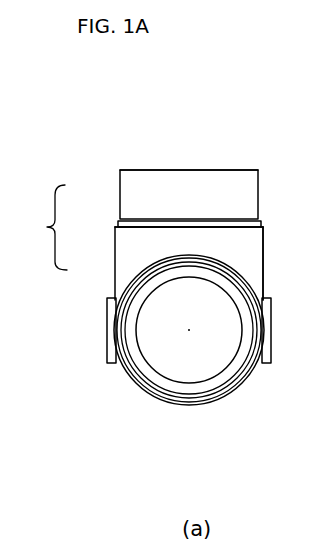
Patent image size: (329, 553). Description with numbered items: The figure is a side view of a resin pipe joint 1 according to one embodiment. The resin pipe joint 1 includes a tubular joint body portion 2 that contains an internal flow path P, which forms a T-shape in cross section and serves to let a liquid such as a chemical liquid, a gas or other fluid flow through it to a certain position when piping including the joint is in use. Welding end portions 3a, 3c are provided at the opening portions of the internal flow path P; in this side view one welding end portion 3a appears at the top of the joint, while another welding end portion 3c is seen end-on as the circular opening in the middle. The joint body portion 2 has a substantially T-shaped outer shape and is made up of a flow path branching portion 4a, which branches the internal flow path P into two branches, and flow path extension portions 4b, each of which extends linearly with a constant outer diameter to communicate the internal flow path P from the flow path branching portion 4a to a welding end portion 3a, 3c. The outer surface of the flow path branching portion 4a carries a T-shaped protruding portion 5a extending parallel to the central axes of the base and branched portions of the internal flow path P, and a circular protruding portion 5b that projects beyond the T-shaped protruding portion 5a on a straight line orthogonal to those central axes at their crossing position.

The resin pipe joint 1 is at (92, 148).
The joint body portion 2 is at (47, 227).
The welding end portion 3a is at (241, 169).
The welding end portion 3c is at (157, 381).
The flow path branching portion 4a is at (143, 248).
The flow path extension portion 4b is at (148, 197).
The T-shaped protruding portion 5a is at (264, 247).
The circular protruding portion 5b is at (270, 325).
The internal flow path P is at (180, 350).